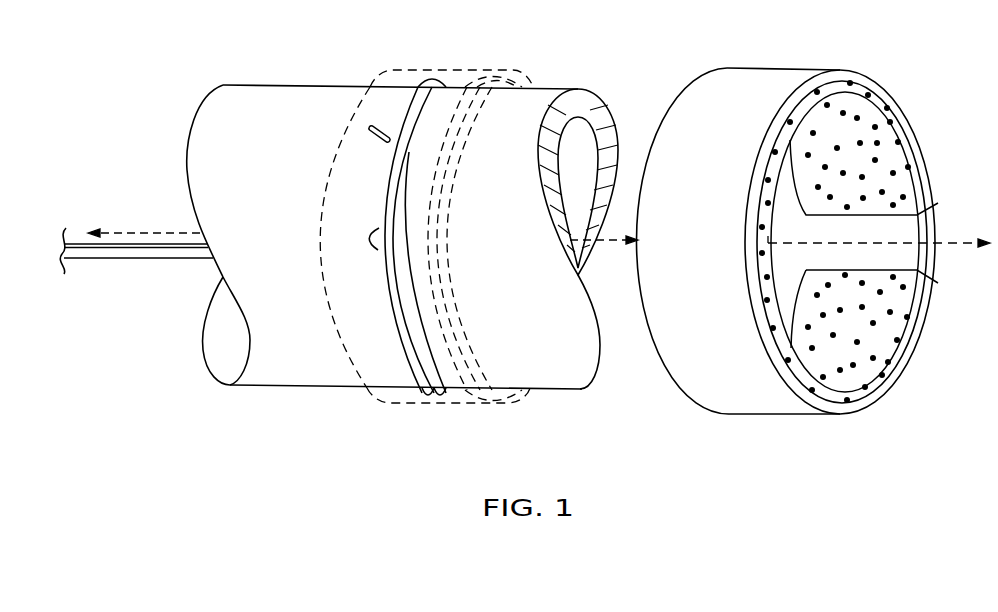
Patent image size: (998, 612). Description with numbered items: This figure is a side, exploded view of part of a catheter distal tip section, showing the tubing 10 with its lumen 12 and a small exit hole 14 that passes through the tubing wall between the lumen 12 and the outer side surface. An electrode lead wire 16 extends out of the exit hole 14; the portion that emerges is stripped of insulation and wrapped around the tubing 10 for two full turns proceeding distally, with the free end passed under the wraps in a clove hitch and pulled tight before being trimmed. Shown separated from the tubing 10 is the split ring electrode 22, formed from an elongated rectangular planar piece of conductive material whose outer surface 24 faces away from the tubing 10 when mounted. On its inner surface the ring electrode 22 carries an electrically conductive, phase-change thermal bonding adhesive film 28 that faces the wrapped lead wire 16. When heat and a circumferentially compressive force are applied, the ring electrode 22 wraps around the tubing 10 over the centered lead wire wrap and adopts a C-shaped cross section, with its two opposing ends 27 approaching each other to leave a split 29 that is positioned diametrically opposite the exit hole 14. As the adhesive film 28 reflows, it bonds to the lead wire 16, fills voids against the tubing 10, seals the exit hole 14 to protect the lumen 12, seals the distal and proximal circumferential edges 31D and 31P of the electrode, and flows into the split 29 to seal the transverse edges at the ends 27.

The tubing 10 is at (301, 84).
The lumen 12 is at (578, 140).
The exit hole 14 is at (368, 254).
The electrode lead wire 16 is at (440, 83).
The ring electrode 22 is at (788, 67).
The outer surface 24 is at (713, 255).
The opposing ends 27 is at (896, 215).
The thermal bonding adhesive film 28 is at (858, 83).
The split 29 is at (900, 255).
The proximal circumferential edge 31P is at (673, 378).
The distal circumferential edge 31D is at (802, 400).